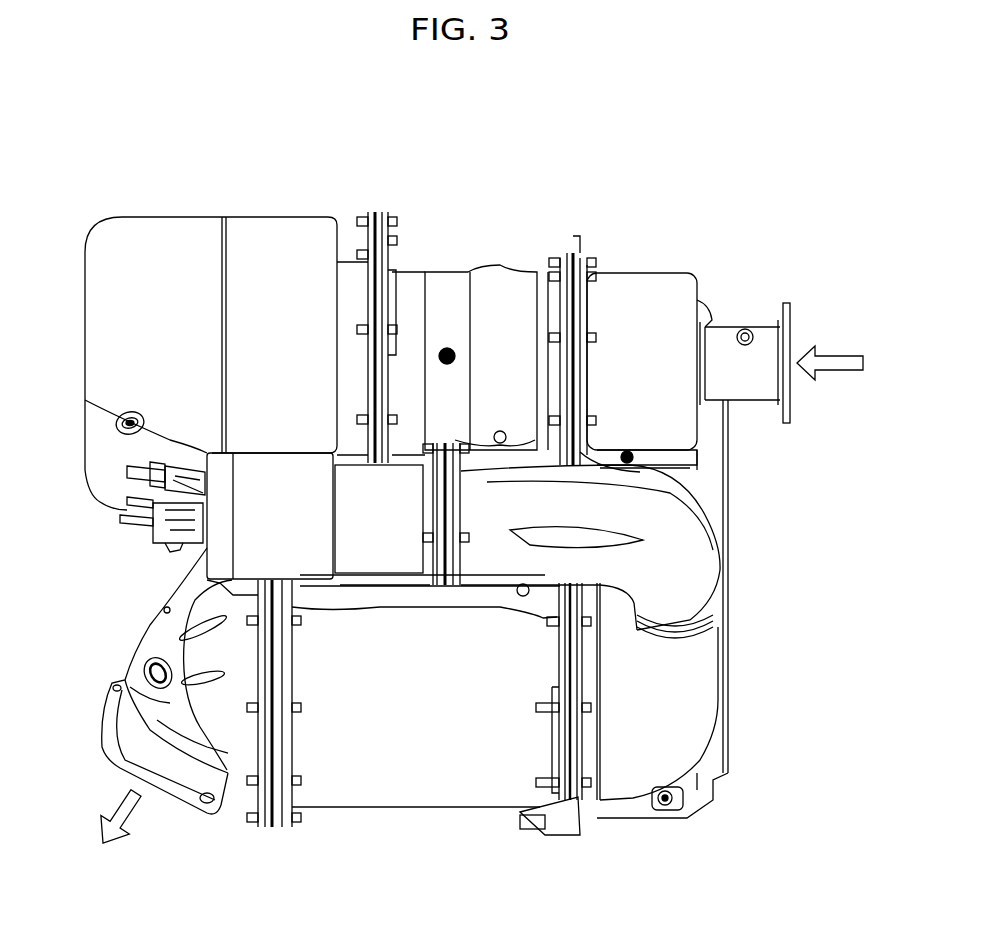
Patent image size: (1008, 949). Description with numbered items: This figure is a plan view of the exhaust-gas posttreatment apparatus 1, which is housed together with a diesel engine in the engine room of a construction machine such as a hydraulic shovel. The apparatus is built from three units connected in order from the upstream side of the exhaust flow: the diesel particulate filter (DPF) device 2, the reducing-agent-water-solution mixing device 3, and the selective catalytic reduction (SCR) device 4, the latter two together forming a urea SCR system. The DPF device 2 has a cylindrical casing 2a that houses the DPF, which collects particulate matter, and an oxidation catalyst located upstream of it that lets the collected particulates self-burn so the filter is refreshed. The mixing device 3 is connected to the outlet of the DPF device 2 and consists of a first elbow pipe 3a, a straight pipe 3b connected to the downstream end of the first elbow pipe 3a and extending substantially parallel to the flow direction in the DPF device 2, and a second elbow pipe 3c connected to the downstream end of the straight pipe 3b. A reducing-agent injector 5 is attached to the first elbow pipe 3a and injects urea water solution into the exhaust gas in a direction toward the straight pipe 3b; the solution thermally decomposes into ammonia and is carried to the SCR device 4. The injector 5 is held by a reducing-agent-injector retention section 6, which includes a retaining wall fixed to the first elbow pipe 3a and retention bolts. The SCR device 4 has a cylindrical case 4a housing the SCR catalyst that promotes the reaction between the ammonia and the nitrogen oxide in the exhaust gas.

The exhaust-gas posttreatment apparatus 1 is at (268, 172).
The diesel particulate filter (DPF) device 2 is at (618, 262).
The casing 2a is at (500, 280).
The reducing-agent-water-solution mixing device 3 is at (386, 497).
The first elbow pipe 3a is at (253, 545).
The straight pipe 3b is at (383, 552).
The second elbow pipe 3c is at (683, 540).
The selective catalytic reduction (SCR) device 4 is at (470, 784).
The case 4a is at (338, 767).
The reducing-agent injector 5 is at (175, 520).
The reducing-agent-injector retention section 6 is at (190, 468).